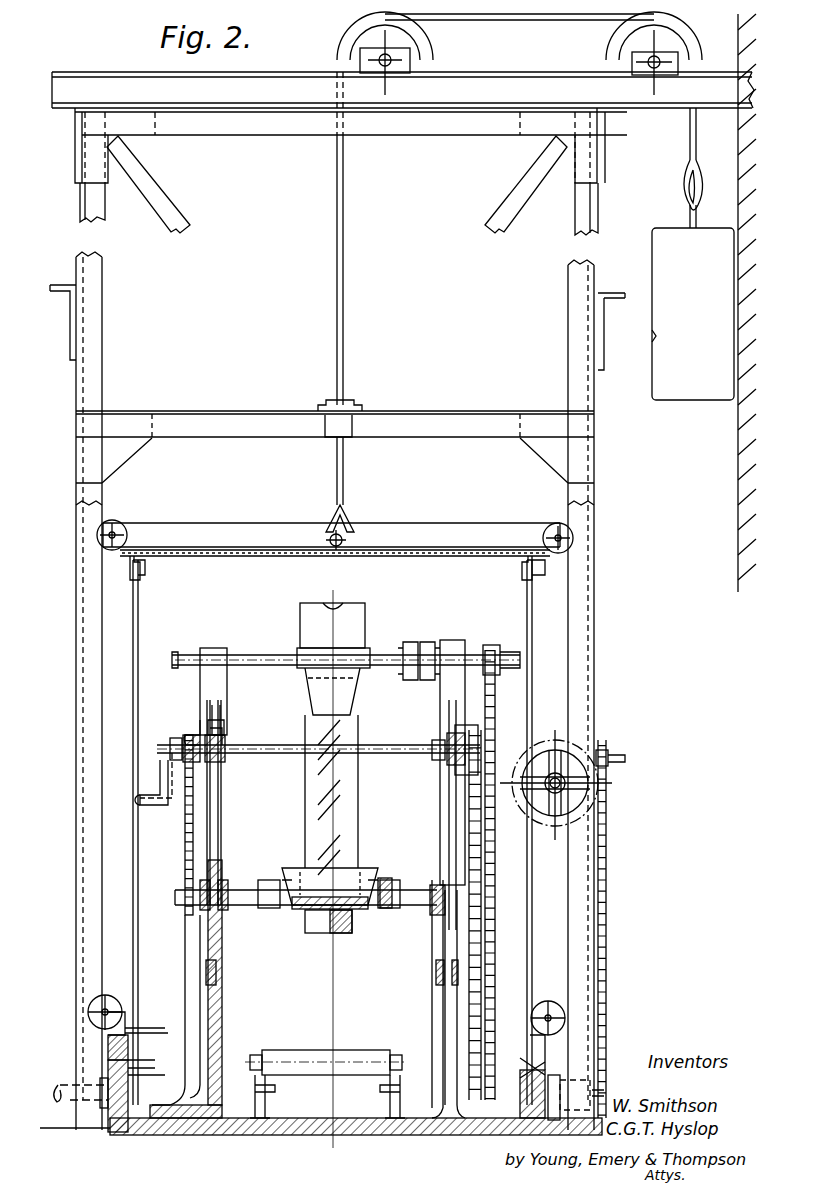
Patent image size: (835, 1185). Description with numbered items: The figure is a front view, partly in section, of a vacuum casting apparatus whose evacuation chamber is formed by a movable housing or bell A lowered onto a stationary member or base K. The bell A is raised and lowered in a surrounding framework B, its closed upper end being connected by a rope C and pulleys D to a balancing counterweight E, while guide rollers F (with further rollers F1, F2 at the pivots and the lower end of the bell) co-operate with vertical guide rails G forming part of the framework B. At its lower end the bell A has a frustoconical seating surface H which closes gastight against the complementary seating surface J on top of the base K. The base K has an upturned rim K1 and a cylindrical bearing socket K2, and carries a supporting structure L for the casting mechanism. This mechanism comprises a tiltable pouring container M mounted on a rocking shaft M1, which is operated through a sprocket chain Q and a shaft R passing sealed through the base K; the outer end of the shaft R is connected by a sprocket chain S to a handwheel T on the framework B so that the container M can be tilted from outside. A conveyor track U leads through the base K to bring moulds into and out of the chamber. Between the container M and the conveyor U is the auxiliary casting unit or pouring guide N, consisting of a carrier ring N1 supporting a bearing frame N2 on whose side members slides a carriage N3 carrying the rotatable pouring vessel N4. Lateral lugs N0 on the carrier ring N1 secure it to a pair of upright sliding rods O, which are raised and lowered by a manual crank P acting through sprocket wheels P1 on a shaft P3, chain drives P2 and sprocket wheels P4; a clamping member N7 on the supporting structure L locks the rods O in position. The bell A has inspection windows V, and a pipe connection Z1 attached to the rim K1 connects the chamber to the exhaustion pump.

The movable housing or bell A is at (195, 550).
The surrounding framework B is at (104, 345).
The rope C is at (690, 142).
The pulleys D is at (433, 58).
The balancing counterweight E is at (693, 314).
The guide rollers F is at (545, 527).
The pivot F1 is at (120, 520).
The guide pulley F2 is at (125, 997).
The vertical guide rails G is at (104, 600).
The seating surface H is at (545, 1065).
The complementary seating surface J is at (560, 1068).
The stationary member or base K is at (308, 1128).
The upturned rim K1 is at (128, 1082).
The cylindrical bearing socket K2 is at (520, 1070).
The supporting structure L is at (470, 985).
The pouring container or tiltable receptacle M is at (370, 622).
The rocking shaft M1 is at (272, 655).
The auxiliary casting unit or pouring guide N is at (382, 853).
The lateral lugs N0 is at (200, 898).
The carrier ring N1 is at (245, 908).
The bearing frame N2 is at (382, 908).
The carriage N3 is at (390, 878).
The rotatable pouring vessel or pouring guide N4 is at (305, 930).
The clamping member N7 is at (195, 722).
The upright sliding rods O is at (456, 862).
The manual crank P is at (142, 807).
The sprocket wheels P1 is at (195, 770).
The chain drives P2 is at (470, 800).
The shaft P3 is at (405, 750).
The sprocket wheels P4 is at (185, 945).
The sprocket chain Q is at (492, 828).
The shaft R is at (604, 1093).
The sprocket chain S is at (606, 985).
The handwheel T is at (560, 825).
The conveyor track U is at (313, 1063).
The inspection windows V is at (320, 822).
The pipe connection Z1 is at (55, 1085).